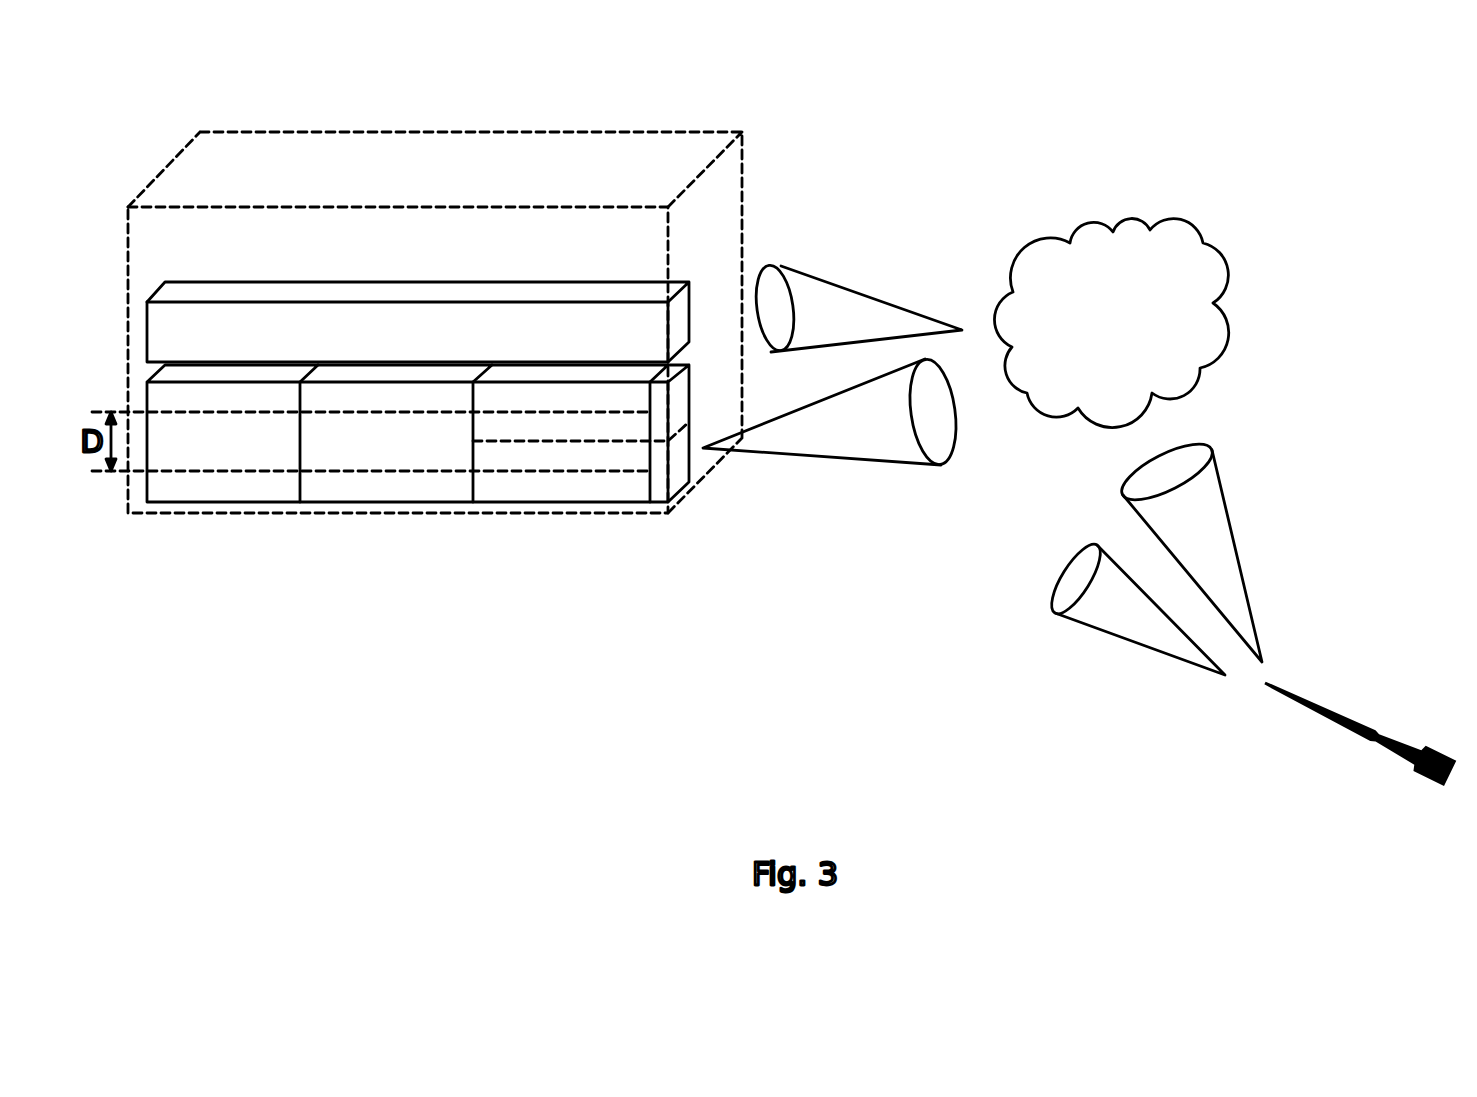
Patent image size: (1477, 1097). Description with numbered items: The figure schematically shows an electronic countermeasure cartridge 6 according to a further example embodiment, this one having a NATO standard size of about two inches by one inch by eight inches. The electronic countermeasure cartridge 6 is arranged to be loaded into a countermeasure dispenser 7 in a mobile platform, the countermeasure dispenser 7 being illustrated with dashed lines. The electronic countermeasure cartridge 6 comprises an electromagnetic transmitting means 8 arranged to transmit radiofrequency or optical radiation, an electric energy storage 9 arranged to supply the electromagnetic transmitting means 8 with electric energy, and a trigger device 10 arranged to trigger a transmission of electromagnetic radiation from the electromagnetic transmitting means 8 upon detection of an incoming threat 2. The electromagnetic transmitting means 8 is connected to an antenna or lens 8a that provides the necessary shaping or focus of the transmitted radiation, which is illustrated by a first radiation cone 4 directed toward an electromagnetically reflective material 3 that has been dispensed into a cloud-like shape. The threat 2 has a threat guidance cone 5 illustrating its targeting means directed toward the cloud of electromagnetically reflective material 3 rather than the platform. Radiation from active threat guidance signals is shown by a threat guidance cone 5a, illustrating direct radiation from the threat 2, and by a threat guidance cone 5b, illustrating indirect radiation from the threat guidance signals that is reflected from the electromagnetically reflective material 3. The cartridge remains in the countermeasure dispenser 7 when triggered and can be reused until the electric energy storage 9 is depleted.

The threat 2 is at (1345, 710).
The electromagnetically reflective material 3 is at (1165, 210).
The first radiation cone 4 is at (847, 458).
The threat guidance cone 5 is at (1245, 582).
The threat guidance cone 5a is at (1110, 637).
The threat guidance cone 5b is at (868, 295).
The electronic countermeasure cartridge 6 is at (147, 288).
The countermeasure dispenser 7 is at (630, 132).
The electromagnetic transmitting means 8 is at (580, 503).
The antenna or lens 8a is at (655, 503).
The electric energy storage 9 is at (402, 503).
The trigger device 10 is at (233, 503).